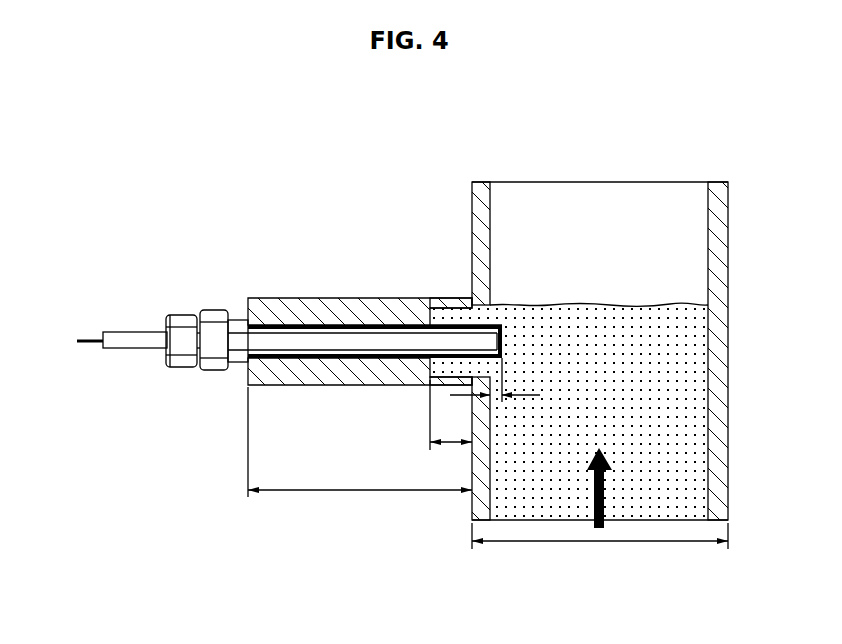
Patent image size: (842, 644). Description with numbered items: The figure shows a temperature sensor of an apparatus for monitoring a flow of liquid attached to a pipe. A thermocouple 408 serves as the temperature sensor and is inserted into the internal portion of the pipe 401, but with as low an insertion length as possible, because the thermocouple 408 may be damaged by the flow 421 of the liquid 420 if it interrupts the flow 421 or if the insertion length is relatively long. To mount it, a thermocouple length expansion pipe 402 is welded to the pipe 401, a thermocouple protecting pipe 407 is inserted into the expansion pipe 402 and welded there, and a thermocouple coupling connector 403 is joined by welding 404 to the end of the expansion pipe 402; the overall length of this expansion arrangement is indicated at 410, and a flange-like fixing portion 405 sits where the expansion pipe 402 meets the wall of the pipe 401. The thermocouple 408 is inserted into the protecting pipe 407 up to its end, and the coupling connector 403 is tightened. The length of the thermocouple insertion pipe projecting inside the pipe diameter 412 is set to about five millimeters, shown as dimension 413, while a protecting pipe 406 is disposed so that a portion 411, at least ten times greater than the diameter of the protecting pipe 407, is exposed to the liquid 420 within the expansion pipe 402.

The pipe 401 is at (471, 209).
The thermocouple length expansion pipe 402 is at (308, 388).
The thermocouple coupling connector 403 is at (185, 368).
The welding 404 is at (242, 313).
The flange portion 405 is at (466, 294).
The protecting pipe 406 is at (446, 324).
The thermocouple protecting pipe 407 is at (311, 324).
The thermocouple 408 is at (93, 336).
The plug length dimension 410 is at (362, 493).
The portion exposed to the liquid 411 is at (454, 442).
The pipe diameter 412 is at (600, 545).
The insertion length of about five millimeters 413 is at (476, 396).
The liquid 420 is at (665, 304).
The flow 421 is at (603, 490).